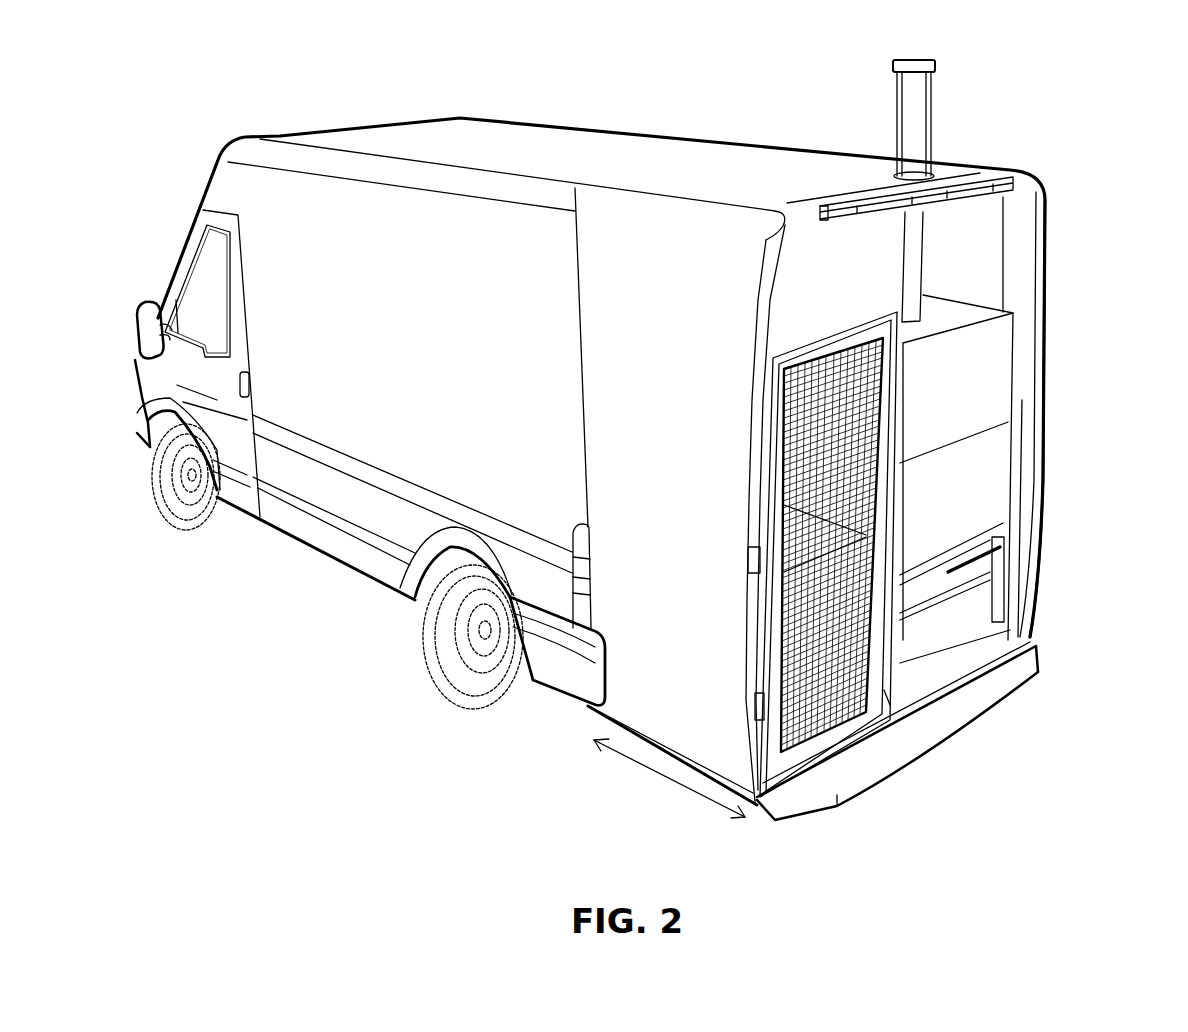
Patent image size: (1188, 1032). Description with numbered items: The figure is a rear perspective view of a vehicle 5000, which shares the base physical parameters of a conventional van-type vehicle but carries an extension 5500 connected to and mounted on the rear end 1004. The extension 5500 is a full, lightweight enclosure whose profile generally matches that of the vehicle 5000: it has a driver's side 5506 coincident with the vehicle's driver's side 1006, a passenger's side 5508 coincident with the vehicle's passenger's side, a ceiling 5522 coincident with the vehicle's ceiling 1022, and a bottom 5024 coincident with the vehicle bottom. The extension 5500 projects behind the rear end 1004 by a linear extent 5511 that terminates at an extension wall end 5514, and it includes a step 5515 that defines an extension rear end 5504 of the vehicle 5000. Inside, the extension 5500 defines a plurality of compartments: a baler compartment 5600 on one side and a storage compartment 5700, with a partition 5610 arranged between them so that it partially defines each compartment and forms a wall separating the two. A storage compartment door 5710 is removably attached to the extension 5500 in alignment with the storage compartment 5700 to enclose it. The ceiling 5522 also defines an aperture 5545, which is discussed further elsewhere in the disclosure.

The vehicle 5000 is at (367, 87).
The ceiling 1022 is at (567, 143).
The driver's side 1006 is at (350, 553).
The rear end 1004 is at (597, 707).
The driver's side 5506 is at (677, 717).
The bottom 5024 is at (692, 778).
The extension 5500 is at (1008, 145).
The ceiling 5522 is at (800, 183).
The aperture 5545 is at (942, 168).
The baler compartment 5600 is at (1040, 225).
The passenger's side 5508 is at (1046, 290).
The partition 5610 is at (903, 343).
The step 5515 is at (1035, 647).
The extension rear end 5504 is at (933, 740).
The linear extent 5511 is at (710, 805).
The storage compartment 5700 is at (787, 357).
The extension wall end 5514 is at (762, 745).
The storage compartment door 5710 is at (878, 697).